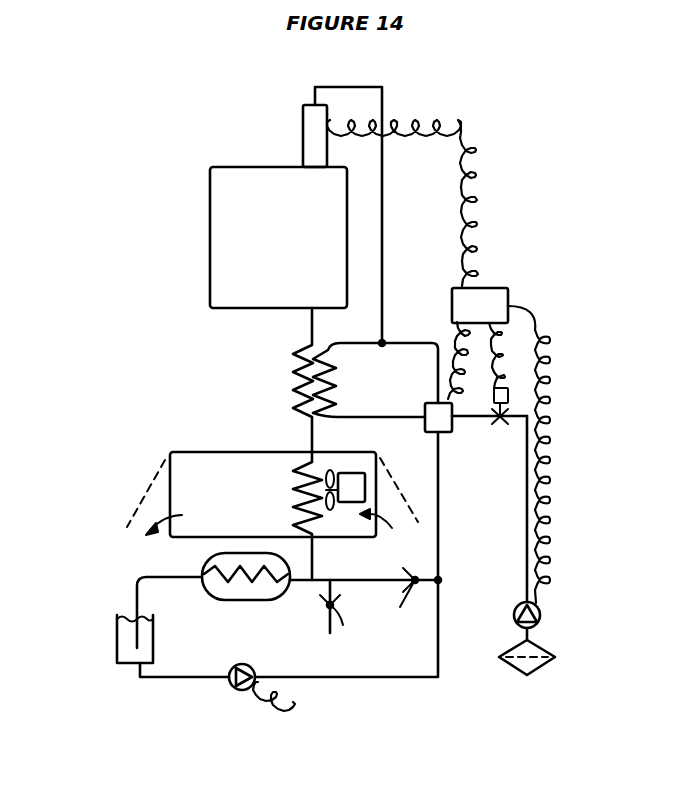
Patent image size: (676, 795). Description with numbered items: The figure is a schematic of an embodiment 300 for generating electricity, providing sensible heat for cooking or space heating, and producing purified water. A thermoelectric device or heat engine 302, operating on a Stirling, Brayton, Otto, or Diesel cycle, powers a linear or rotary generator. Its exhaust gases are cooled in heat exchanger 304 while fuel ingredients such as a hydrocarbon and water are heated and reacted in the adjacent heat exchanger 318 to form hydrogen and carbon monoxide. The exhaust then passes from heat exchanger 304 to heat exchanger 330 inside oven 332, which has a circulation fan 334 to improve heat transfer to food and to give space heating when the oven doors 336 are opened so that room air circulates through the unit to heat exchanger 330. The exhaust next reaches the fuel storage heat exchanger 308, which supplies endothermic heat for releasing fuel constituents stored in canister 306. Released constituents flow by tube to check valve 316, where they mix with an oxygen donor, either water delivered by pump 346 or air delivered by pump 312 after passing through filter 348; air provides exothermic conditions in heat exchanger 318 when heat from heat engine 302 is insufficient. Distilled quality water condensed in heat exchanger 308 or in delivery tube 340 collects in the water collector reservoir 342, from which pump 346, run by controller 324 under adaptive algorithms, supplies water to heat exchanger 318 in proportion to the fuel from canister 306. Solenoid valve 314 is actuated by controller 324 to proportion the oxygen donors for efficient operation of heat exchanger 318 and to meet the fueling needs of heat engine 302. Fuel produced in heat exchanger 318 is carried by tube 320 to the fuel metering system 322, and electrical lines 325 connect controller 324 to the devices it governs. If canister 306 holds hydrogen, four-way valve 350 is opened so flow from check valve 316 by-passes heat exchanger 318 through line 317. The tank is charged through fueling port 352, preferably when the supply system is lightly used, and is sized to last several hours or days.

The embodiment 300 is at (181, 93).
The heat engine 302 is at (232, 167).
The heat exchanger 304 is at (293, 381).
The canister 306 is at (261, 600).
The fuel storage heat exchanger 308 is at (238, 585).
The pump 312 is at (540, 612).
The solenoid valve 314 is at (489, 410).
The check valve 316 is at (410, 592).
The line 317 is at (421, 343).
The heat exchanger 318 is at (337, 378).
The tube 320 is at (383, 196).
The fuel metering system 322 is at (303, 121).
The controller 324 is at (509, 290).
The electrical lines 325 is at (438, 361).
The heat exchanger 330 is at (300, 470).
The oven 332 is at (186, 452).
The circulation fan 334 is at (338, 505).
The oven doors 336 is at (145, 499).
The delivery tube 340 is at (140, 579).
The water collector reservoir 342 is at (117, 656).
The pump 346 is at (233, 689).
The filter 348 is at (553, 653).
The four-way valve 350 is at (425, 412).
The fueling port 352 is at (336, 619).